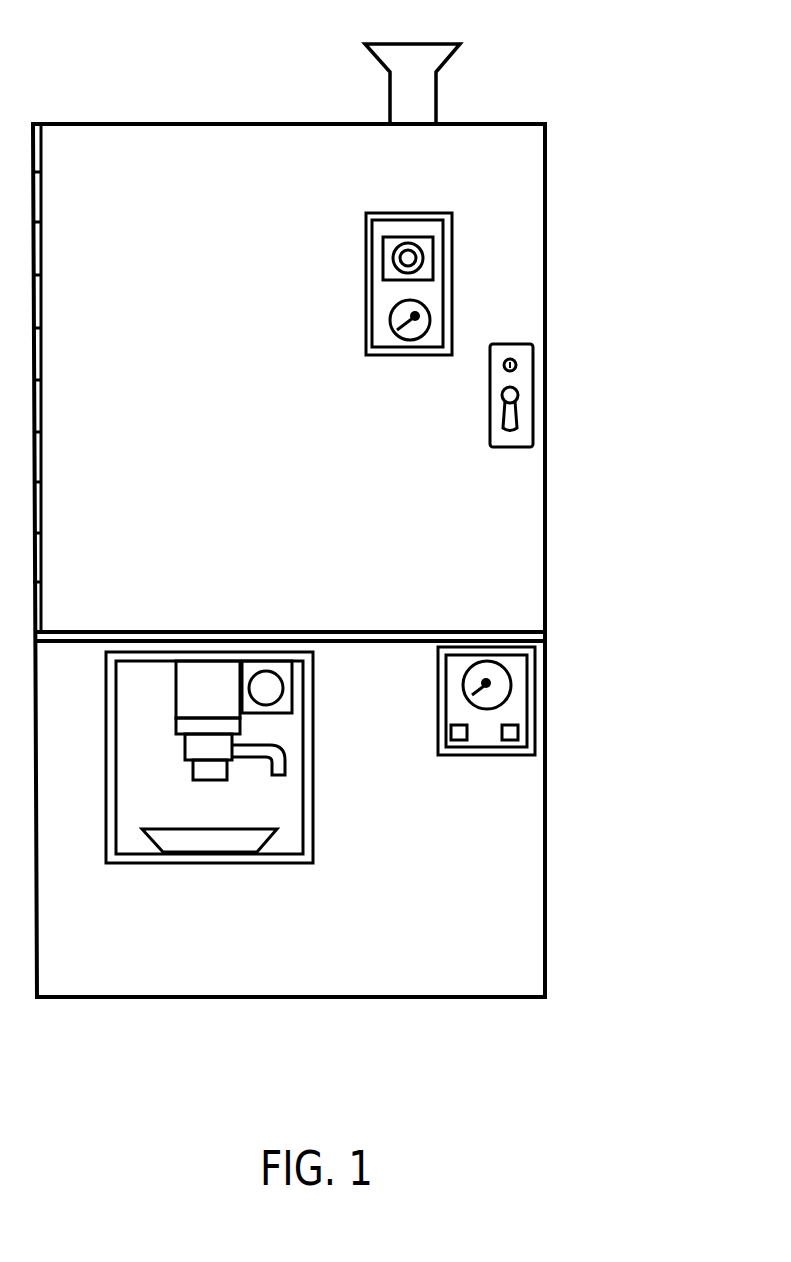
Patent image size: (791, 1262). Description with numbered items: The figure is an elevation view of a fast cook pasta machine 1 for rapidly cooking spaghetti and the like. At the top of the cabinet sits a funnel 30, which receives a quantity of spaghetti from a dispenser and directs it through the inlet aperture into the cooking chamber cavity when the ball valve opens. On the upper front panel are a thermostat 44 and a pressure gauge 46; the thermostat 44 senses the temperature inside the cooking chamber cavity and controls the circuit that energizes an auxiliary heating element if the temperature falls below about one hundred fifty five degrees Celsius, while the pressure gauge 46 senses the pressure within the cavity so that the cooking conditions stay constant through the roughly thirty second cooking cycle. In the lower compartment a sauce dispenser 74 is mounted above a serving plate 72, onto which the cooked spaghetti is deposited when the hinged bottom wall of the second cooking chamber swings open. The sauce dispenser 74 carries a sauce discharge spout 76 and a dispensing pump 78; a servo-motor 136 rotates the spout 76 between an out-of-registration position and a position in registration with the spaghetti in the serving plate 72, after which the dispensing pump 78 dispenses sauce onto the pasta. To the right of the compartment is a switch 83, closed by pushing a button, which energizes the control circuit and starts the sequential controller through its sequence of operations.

The fast cook pasta machine 1 is at (563, 240).
The funnel 30 is at (423, 44).
The thermostat 44 is at (397, 252).
The pressure gauge 46 is at (391, 315).
The sauce dispenser 74 is at (187, 692).
The dispensing pump 78 is at (273, 688).
The sauce discharge spout 76 is at (285, 762).
The servo-motor 136 is at (200, 768).
The serving plate 72 is at (153, 842).
The switch 83 is at (518, 730).